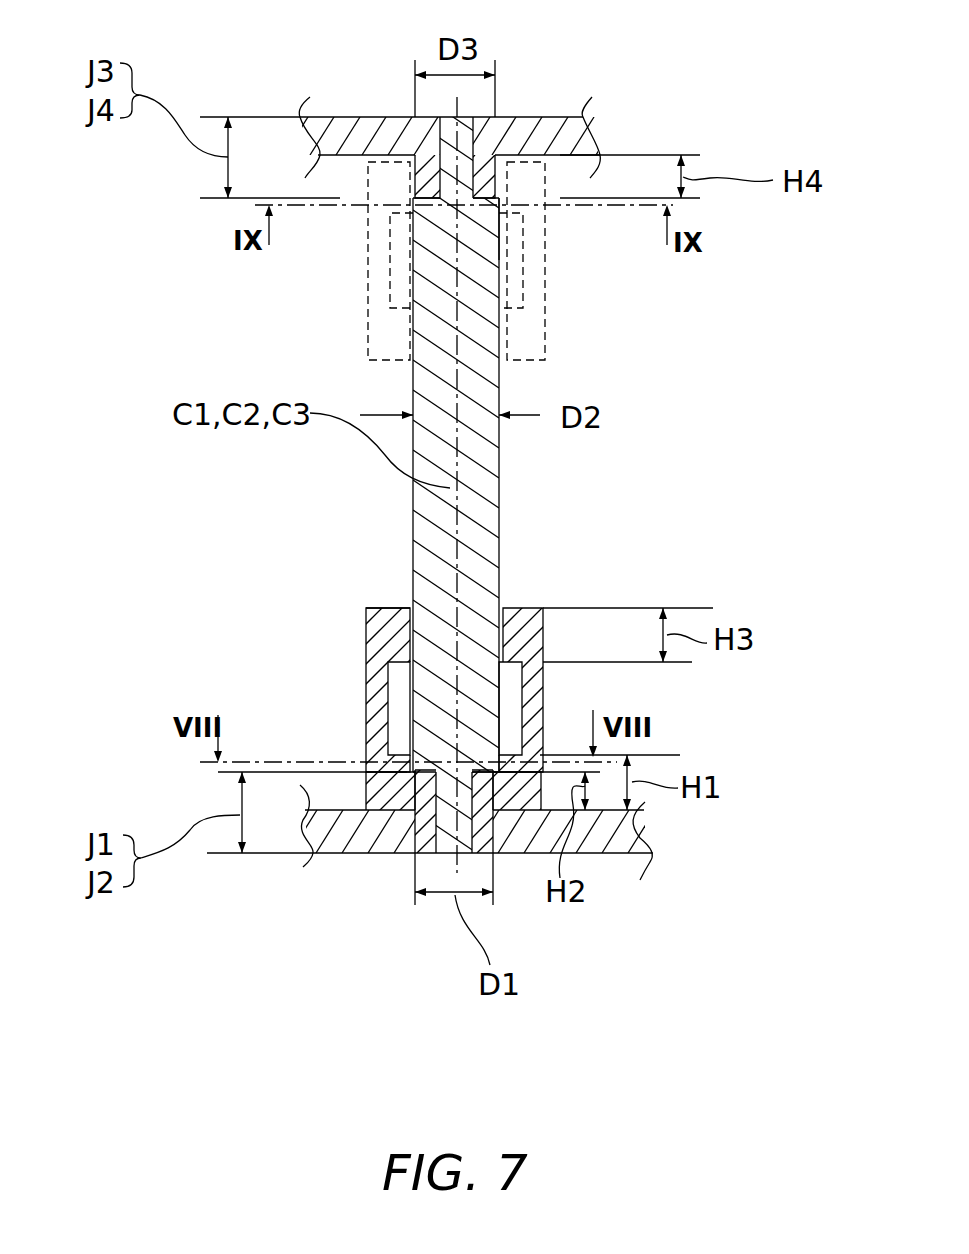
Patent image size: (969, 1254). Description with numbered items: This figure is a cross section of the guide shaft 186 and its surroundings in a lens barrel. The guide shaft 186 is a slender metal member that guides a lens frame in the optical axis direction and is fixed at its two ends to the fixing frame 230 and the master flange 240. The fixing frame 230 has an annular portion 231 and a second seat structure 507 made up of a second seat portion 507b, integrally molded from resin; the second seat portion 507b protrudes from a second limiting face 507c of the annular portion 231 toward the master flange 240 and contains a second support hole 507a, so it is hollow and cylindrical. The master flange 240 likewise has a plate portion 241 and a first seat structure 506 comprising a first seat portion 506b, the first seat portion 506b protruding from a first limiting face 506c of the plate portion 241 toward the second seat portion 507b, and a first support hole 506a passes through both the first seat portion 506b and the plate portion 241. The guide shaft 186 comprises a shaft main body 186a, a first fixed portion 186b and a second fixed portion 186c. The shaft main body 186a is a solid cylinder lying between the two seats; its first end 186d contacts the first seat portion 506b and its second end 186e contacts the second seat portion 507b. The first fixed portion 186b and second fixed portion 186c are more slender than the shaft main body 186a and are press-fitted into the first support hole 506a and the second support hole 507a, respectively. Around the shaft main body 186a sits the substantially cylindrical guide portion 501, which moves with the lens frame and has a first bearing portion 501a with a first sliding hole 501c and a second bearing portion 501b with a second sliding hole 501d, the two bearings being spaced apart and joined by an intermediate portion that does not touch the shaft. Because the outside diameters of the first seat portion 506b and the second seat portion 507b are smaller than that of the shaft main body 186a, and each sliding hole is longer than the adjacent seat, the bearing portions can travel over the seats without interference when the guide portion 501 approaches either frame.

The fixing frame 230 is at (338, 104).
The annular portion 231 is at (547, 117).
The second pin 507 is at (142, 258).
The second support hole 507a is at (443, 140).
The second seat portion 507b is at (428, 165).
The second limiting face 507c is at (570, 157).
The guide shaft 186 is at (738, 290).
The shaft main body 186a is at (480, 470).
The first fixed portion 186b is at (505, 785).
The second fixed portion 186c is at (473, 157).
The first end 186d is at (480, 723).
The second end 186e is at (477, 227).
The guide portion 501 is at (140, 558).
The first bearing portion 501a is at (395, 785).
The second bearing portion 501b is at (398, 635).
The first sliding hole 501c is at (510, 742).
The second sliding hole 501d is at (418, 592).
The first pin 506 is at (385, 953).
The first support hole 506a is at (440, 853).
The first seat portion 506b is at (447, 827).
The first limiting face 506c is at (343, 806).
The master flange 240 is at (620, 866).
The plate portion 241 is at (598, 840).